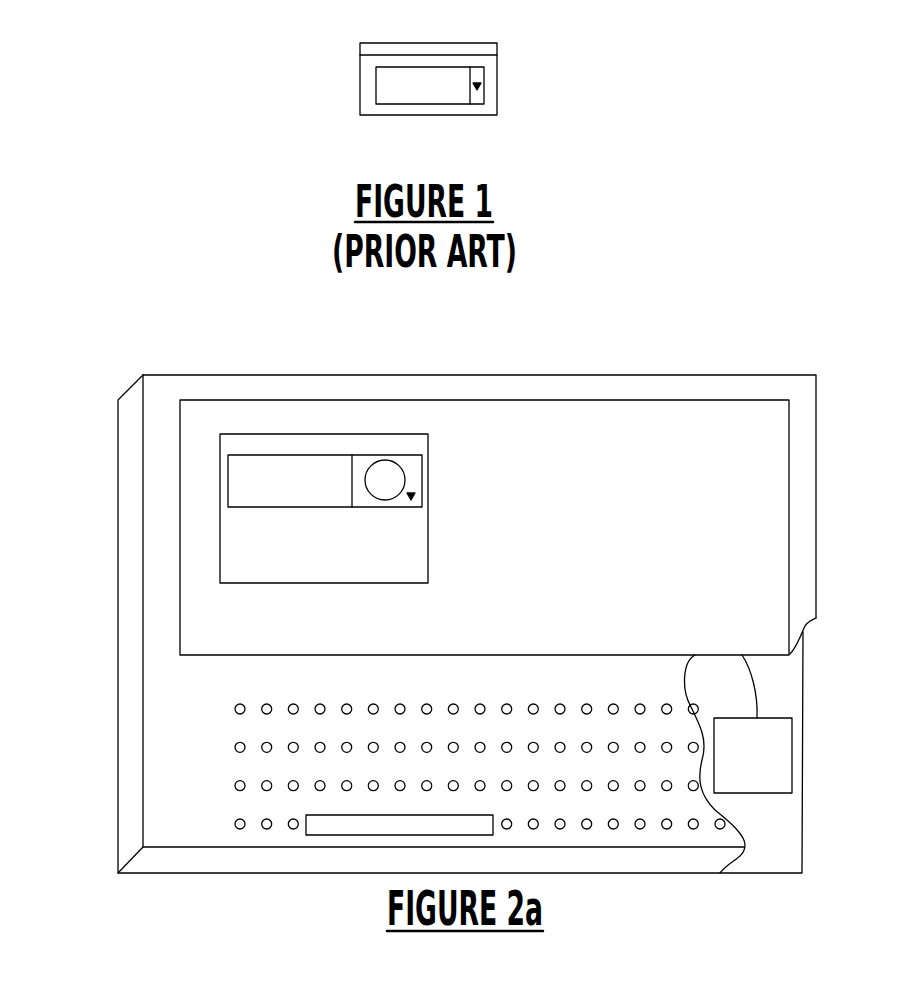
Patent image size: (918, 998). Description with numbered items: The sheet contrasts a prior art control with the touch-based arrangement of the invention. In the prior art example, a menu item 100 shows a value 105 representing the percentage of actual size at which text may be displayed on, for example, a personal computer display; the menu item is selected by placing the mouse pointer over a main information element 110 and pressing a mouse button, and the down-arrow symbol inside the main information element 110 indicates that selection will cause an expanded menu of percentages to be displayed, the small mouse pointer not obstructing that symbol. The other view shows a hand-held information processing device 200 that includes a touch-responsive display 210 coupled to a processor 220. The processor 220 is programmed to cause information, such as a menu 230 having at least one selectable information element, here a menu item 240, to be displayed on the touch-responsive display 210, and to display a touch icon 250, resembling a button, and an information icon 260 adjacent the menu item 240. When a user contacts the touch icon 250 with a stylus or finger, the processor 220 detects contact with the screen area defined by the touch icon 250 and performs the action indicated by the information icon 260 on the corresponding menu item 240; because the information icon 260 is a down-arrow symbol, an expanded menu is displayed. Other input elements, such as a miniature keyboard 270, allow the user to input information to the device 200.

In FIG. 1, the menu item 100 is at (430, 67).
In FIG. 1, the value 105 is at (396, 100).
In FIG. 1, the main information element 110 is at (481, 72).
In FIG. 2A, the hand-held information processing device 200 is at (71, 891).
In FIG. 2A, the touch-responsive display 210 is at (788, 494).
In FIG. 2A, the processor 220 is at (773, 718).
In FIG. 2A, the menu 230 is at (428, 583).
In FIG. 2A, the menu item 240 is at (277, 508).
In FIG. 2A, the touch icon 250 is at (402, 465).
In FIG. 2A, the information icon 260 is at (412, 493).
In FIG. 2A, the miniature keyboard 270 is at (181, 788).